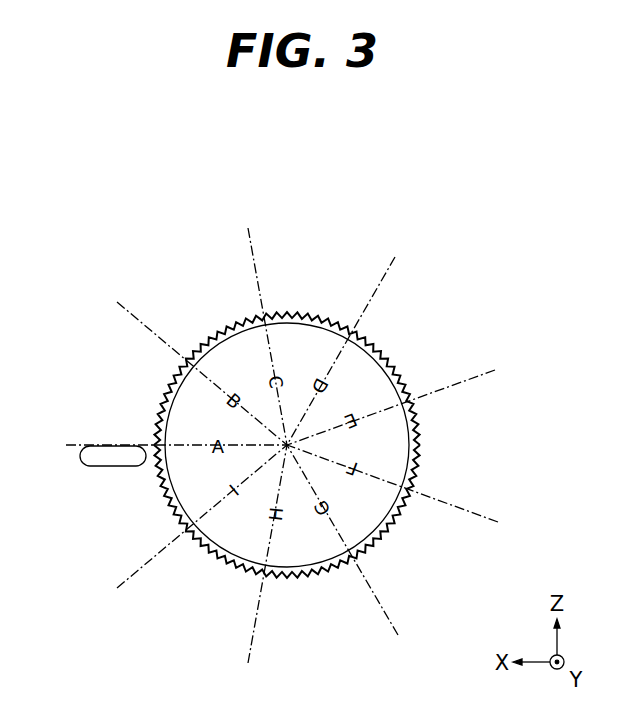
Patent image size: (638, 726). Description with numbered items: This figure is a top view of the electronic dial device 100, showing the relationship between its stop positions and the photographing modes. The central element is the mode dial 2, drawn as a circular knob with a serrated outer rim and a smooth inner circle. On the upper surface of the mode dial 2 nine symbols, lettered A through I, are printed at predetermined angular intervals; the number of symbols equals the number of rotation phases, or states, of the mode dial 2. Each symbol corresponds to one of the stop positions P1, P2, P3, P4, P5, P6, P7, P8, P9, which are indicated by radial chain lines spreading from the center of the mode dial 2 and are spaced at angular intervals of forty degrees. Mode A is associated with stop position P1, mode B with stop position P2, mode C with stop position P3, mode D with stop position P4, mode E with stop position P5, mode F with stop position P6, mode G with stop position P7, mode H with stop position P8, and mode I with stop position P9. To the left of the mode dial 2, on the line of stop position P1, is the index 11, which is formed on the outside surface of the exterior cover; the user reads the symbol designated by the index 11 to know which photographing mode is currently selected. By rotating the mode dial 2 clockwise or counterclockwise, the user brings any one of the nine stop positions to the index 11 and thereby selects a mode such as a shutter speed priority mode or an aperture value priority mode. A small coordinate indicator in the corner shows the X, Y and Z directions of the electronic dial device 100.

The electronic dial device 100 is at (543, 268).
The mode dial 2 is at (236, 570).
The index 11 is at (110, 468).
The stop position P1 is at (161, 445).
The stop position P2 is at (188, 363).
The stop position P3 is at (263, 325).
The stop position P4 is at (351, 340).
The stop position P5 is at (408, 401).
The stop position P6 is at (408, 490).
The stop position P7 is at (351, 555).
The stop position P8 is at (263, 569).
The stop position P9 is at (186, 529).